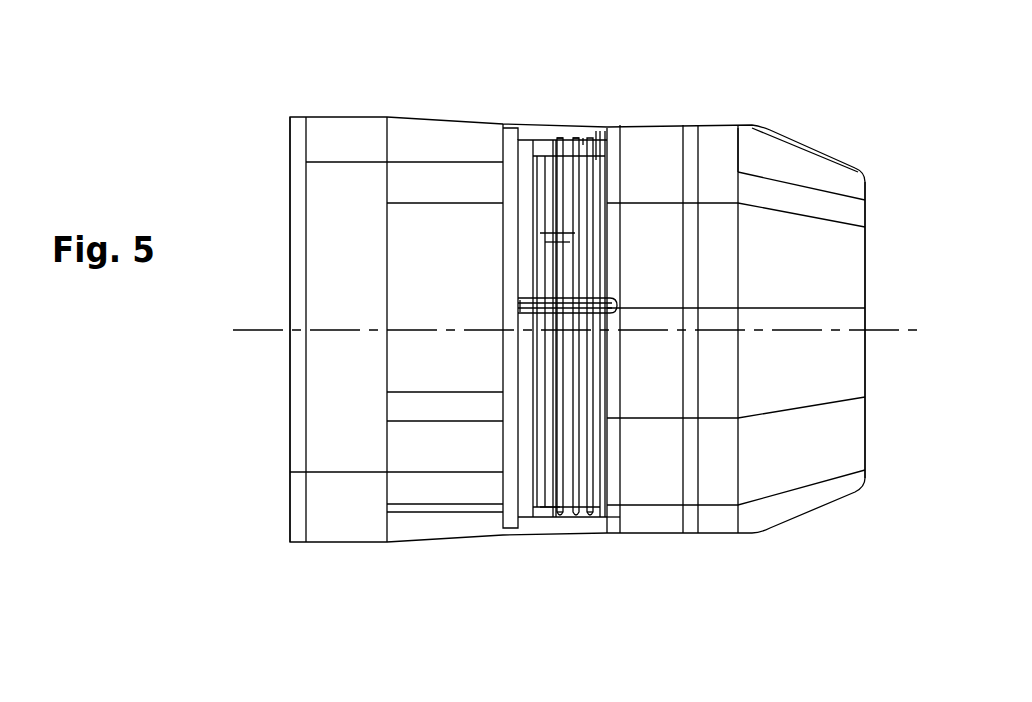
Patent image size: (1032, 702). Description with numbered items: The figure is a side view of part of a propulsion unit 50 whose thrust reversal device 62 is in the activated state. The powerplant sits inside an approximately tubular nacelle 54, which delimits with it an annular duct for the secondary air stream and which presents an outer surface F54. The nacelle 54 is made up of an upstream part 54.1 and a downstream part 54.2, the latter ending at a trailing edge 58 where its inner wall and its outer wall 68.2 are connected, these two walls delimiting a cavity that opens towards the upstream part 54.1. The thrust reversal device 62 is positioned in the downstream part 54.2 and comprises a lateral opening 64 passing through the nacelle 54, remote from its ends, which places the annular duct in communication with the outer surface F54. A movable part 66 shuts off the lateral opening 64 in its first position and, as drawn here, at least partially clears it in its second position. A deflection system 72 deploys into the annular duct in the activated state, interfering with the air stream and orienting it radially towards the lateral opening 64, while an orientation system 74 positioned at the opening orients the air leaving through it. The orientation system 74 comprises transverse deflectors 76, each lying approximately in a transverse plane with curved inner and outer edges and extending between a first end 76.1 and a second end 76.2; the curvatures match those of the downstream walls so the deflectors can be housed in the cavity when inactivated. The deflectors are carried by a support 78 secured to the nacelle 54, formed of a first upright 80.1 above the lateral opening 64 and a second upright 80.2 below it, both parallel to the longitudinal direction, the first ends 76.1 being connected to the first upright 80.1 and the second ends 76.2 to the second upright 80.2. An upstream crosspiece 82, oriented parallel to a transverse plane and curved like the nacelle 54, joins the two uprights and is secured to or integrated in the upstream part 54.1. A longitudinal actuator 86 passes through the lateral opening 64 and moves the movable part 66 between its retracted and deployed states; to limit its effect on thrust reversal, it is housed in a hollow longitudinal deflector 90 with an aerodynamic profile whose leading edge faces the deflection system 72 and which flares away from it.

The propulsion unit 50 is at (296, 98).
The nacelle 54 is at (868, 577).
The outer surface F54 is at (352, 130).
The upstream part 54.1 is at (438, 130).
The downstream part 54.2 is at (700, 130).
The trailing edge 58 is at (870, 208).
The thrust reversal device 62 is at (525, 412).
The lateral opening 64 is at (605, 362).
The movable part 66 is at (730, 133).
The outer wall 68.2 is at (645, 515).
The deflection system 72 is at (586, 140).
The orientation system 74 is at (552, 430).
The transverse deflector 76 is at (587, 227).
The first end 76.1 is at (574, 138).
The second end 76.2 is at (592, 518).
The support 78 is at (546, 142).
The first upright 80.1 is at (597, 136).
The second upright 80.2 is at (550, 518).
The upstream crosspiece 82 is at (570, 233).
The longitudinal actuator 86 is at (528, 312).
The longitudinal deflector 90 is at (528, 297).